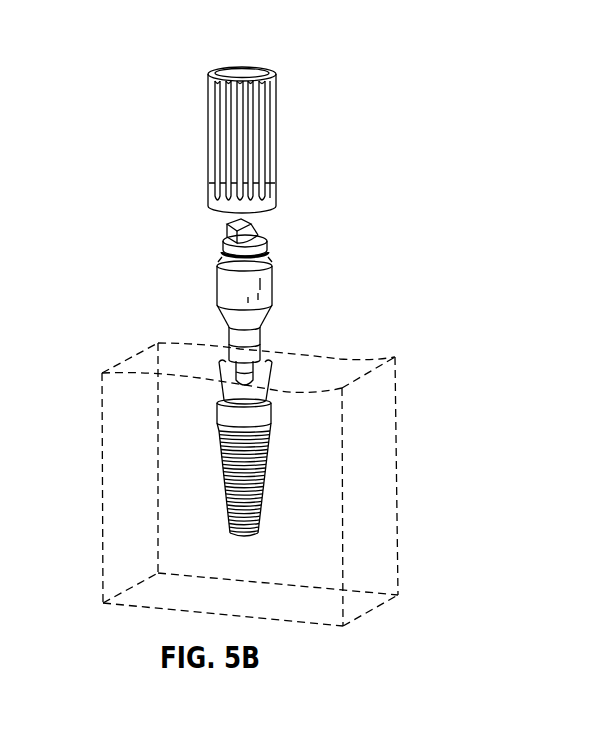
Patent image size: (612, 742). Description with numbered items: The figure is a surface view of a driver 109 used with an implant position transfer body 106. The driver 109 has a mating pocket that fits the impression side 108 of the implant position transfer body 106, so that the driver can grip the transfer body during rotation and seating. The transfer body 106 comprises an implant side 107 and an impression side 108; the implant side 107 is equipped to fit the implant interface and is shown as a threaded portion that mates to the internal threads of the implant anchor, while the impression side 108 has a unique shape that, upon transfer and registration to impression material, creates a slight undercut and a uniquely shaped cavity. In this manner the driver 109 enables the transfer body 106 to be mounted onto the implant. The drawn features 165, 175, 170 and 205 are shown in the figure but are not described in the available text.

The driver 109 is at (308, 36).
The drive head 165 is at (230, 222).
The engagement tab 175 is at (248, 232).
The coupling band 170 is at (219, 244).
The implant position transfer body 106 is at (286, 270).
The impression side 108 is at (200, 285).
The implant side 107 is at (276, 337).
The implant 205 is at (220, 390).